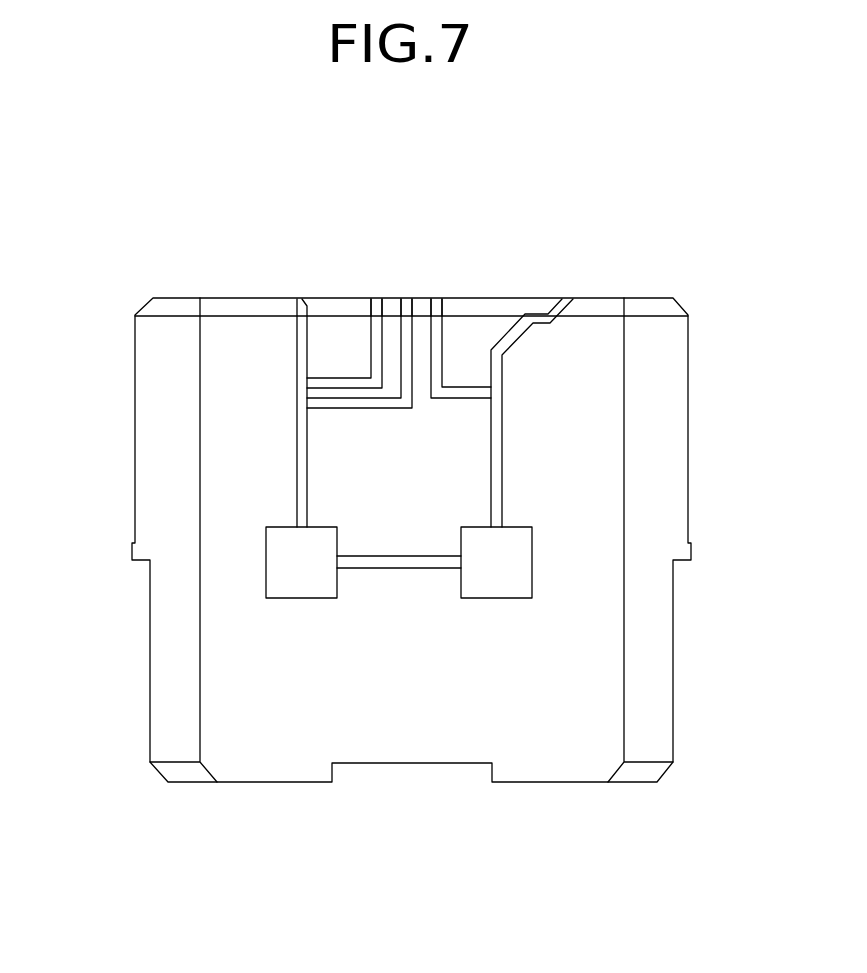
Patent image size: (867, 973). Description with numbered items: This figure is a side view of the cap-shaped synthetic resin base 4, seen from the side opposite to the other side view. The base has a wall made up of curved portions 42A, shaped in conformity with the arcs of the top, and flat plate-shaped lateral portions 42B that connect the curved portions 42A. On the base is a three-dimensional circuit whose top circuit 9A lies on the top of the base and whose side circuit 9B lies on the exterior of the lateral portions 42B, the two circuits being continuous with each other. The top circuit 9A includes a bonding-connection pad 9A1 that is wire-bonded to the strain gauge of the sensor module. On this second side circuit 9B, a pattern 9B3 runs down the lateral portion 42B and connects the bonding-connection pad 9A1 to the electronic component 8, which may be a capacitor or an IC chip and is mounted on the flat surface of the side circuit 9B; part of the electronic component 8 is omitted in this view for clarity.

The synthetic resin base 4 is at (657, 222).
The curved portions 42A is at (142, 407).
The lateral portions 42B is at (268, 710).
The top circuit 9A is at (436, 293).
The bonding-connection pad 9A1 is at (407, 298).
The side circuit 9B is at (525, 488).
The pattern 9B3 is at (342, 380).
The electronic component 8 is at (280, 567).